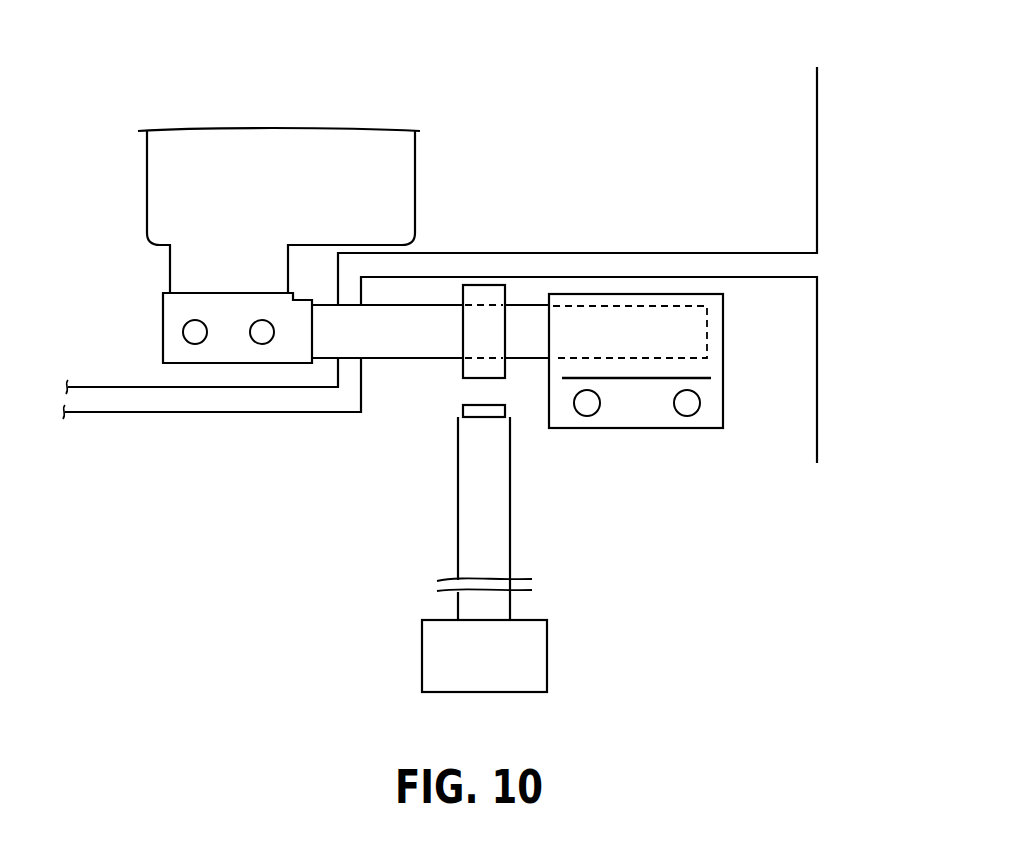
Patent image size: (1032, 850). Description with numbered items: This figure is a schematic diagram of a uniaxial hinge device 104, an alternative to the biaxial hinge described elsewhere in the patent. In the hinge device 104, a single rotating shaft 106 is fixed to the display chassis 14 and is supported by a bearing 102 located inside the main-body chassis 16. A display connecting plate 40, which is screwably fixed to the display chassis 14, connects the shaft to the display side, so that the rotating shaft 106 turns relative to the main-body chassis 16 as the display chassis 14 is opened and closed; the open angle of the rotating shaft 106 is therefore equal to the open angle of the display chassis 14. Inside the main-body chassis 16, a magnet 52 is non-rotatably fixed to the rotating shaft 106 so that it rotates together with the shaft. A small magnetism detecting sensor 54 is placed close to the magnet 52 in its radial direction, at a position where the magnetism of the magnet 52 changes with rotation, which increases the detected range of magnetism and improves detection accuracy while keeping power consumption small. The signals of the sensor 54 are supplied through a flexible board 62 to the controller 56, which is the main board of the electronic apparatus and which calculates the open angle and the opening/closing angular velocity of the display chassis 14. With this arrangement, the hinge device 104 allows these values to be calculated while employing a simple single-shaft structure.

The uniaxial hinge device 104 is at (642, 73).
The display connecting plate 40 is at (158, 185).
The display chassis 14 is at (796, 182).
The main-body chassis 16 is at (796, 347).
The rotating shaft 106 is at (424, 308).
The magnet 52 is at (478, 336).
The sensor 54 is at (466, 410).
The flexible board 62 is at (503, 545).
The controller 56 is at (525, 654).
The bearing 102 is at (651, 413).